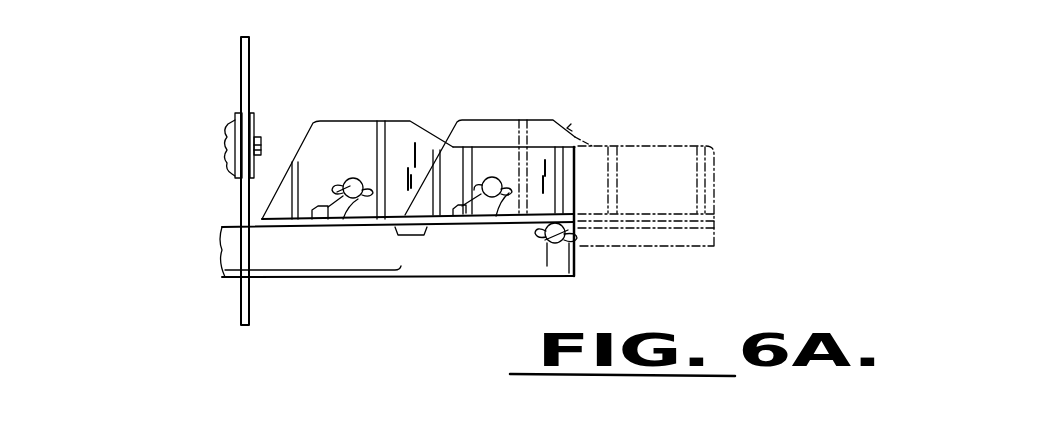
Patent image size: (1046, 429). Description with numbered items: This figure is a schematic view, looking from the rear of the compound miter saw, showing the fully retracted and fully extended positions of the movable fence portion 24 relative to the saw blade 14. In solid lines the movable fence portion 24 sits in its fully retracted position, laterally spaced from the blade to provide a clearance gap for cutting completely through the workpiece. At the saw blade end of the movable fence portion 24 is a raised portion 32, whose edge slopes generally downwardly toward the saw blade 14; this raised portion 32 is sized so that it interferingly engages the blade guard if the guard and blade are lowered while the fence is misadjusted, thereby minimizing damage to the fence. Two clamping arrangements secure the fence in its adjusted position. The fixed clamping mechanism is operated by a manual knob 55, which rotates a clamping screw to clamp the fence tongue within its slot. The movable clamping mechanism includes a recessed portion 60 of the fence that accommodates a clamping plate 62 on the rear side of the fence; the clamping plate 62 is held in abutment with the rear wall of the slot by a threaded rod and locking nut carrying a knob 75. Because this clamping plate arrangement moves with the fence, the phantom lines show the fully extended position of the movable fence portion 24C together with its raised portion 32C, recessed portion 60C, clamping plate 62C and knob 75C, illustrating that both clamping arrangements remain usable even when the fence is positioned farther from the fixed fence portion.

The saw blade 14 is at (238, 51).
The movable fence portion 24 is at (408, 138).
The movable fence portion in fully extended position 24C is at (670, 143).
The raised portion 32 is at (323, 131).
The raised portion in fully extended position 32C is at (570, 127).
The manual knob 55 is at (575, 247).
The recessed portion 60 is at (343, 219).
The recessed portion in fully extended position 60C is at (496, 218).
The clamping plate 62 is at (327, 207).
The clamping plate in fully extended position 62C is at (457, 212).
The knob 75 is at (347, 178).
The knob in fully extended position 75C is at (494, 177).